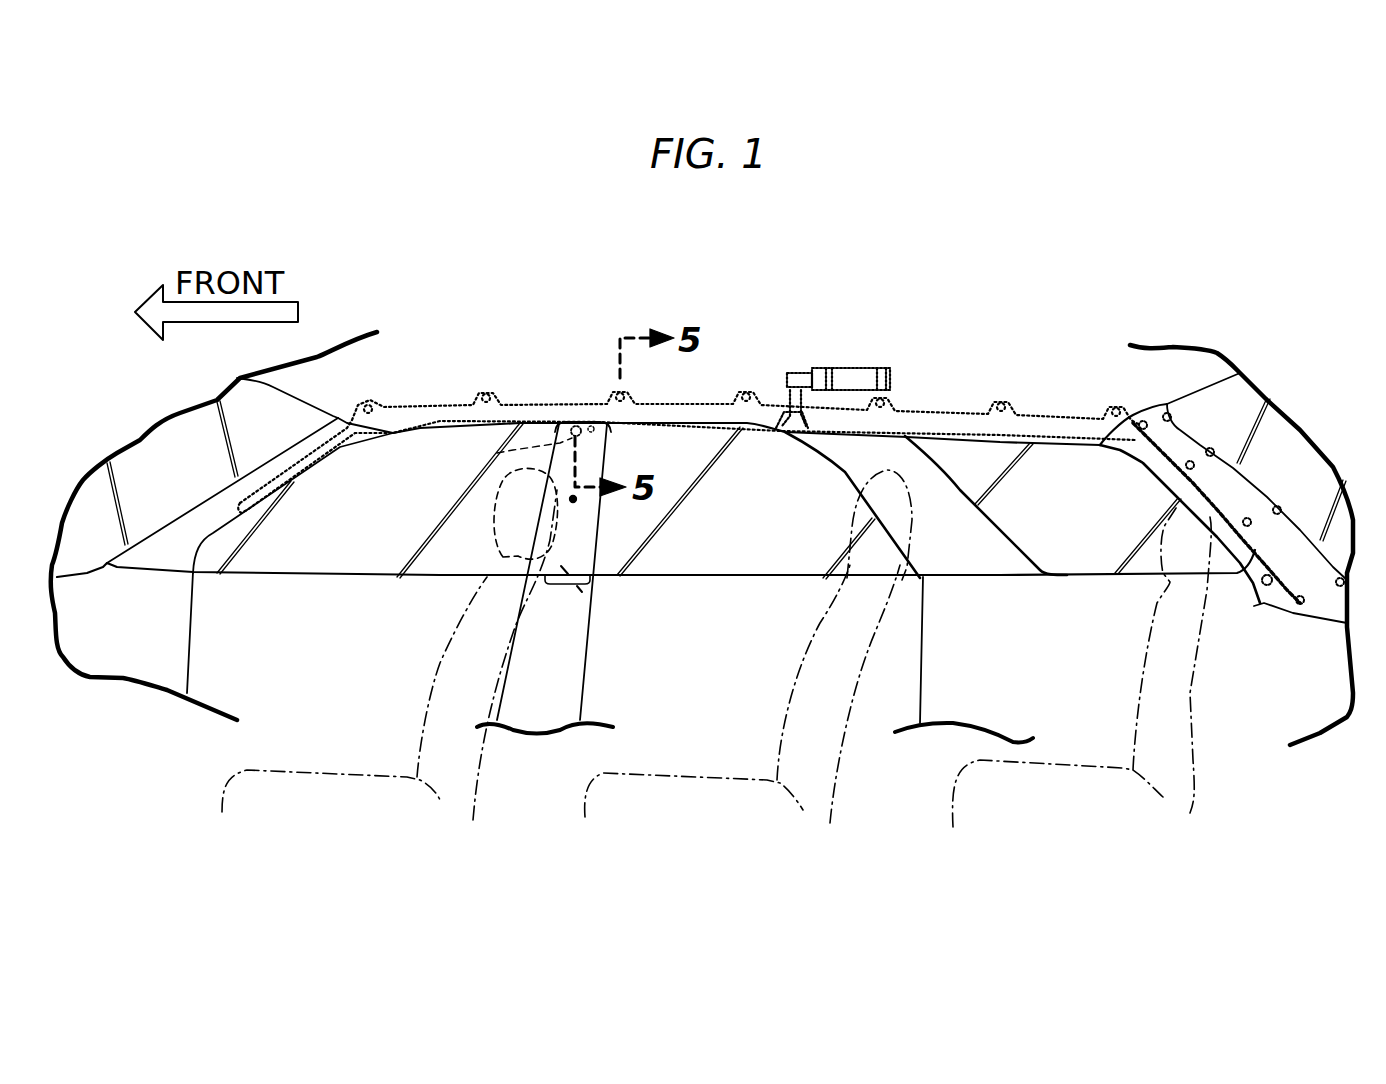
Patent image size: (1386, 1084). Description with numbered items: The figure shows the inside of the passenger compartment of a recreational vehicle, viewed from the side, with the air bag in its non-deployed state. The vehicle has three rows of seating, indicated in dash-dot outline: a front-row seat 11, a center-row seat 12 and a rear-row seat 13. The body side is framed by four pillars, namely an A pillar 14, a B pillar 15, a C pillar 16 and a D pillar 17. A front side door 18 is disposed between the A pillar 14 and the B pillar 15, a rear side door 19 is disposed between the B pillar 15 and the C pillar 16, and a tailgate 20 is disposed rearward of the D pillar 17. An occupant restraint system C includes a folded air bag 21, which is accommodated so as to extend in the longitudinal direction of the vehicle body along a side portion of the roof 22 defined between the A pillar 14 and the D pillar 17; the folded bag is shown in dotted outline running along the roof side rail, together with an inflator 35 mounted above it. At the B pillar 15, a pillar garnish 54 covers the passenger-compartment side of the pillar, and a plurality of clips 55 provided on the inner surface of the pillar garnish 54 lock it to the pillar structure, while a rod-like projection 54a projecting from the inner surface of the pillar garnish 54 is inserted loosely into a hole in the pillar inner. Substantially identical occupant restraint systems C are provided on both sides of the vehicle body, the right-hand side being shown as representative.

The front-row seat 11 is at (345, 785).
The center-row seat 12 is at (676, 790).
The rear-row seat 13 is at (1053, 775).
The A pillar 14 is at (198, 512).
The B pillar 15 is at (567, 657).
The C pillar 16 is at (860, 470).
The D pillar 17 is at (1152, 461).
The front side door 18 is at (248, 686).
The rear side door 19 is at (765, 670).
The tailgate 20 is at (1298, 443).
The air bag 21 is at (445, 395).
The roof 22 is at (582, 335).
The inflator 35 is at (860, 370).
The pillar garnish 54 is at (588, 530).
The projection 54a is at (575, 417).
The clips 55 is at (486, 453).
The occupant restraint system C is at (940, 378).